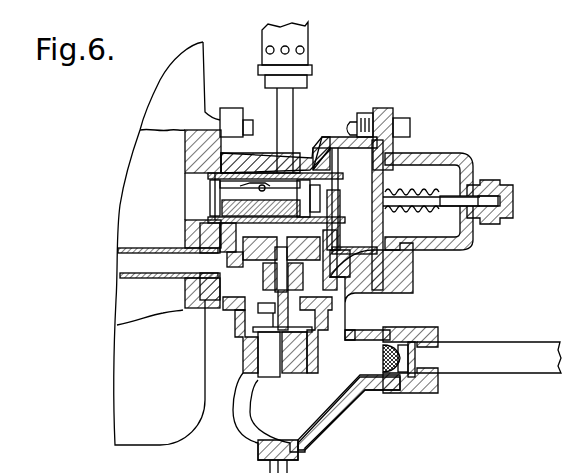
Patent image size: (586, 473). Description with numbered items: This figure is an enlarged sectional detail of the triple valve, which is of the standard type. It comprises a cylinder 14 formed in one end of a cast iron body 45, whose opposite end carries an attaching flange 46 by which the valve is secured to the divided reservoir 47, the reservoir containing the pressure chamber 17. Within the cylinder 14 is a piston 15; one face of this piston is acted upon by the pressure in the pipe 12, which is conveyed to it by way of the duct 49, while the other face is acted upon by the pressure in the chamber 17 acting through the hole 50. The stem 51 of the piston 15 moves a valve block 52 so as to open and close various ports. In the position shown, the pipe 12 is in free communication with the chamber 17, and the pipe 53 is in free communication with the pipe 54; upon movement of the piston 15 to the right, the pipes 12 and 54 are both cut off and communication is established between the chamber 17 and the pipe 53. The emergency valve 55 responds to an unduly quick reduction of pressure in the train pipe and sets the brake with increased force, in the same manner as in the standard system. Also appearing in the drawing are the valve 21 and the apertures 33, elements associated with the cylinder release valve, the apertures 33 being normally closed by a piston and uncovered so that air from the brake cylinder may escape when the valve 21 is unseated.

The pipe 12 is at (487, 347).
The cylinder 14 is at (361, 181).
The piston 15 is at (377, 178).
The pressure chamber 17 is at (168, 171).
The valve 21 is at (308, 28).
The apertures 33 is at (304, 50).
The cast iron body 45 is at (300, 157).
The attaching flange 46 is at (236, 118).
The divided reservoir 47 is at (180, 397).
The duct 49 is at (362, 270).
The hole 50 is at (195, 193).
The stem 51 is at (230, 190).
The valve block 52 is at (215, 210).
The pipe 53 is at (142, 252).
The pipe 54 is at (295, 100).
The emergency valve 55 is at (268, 367).